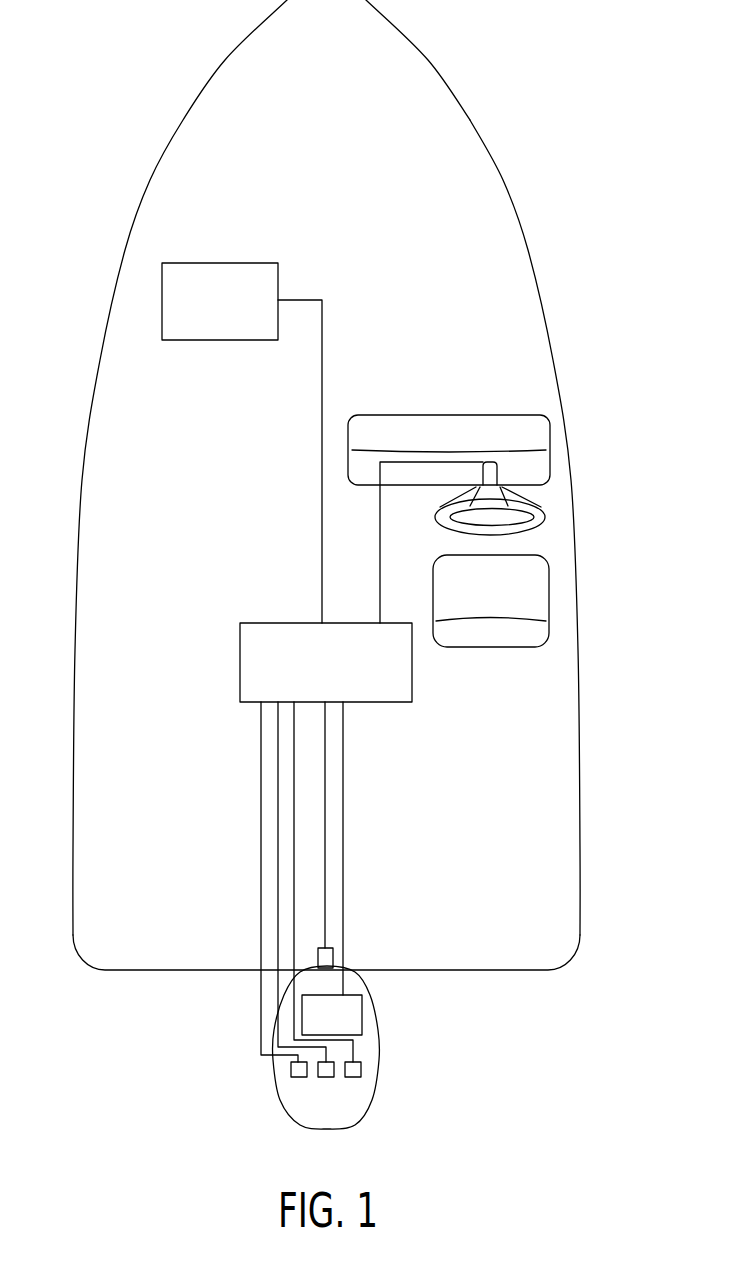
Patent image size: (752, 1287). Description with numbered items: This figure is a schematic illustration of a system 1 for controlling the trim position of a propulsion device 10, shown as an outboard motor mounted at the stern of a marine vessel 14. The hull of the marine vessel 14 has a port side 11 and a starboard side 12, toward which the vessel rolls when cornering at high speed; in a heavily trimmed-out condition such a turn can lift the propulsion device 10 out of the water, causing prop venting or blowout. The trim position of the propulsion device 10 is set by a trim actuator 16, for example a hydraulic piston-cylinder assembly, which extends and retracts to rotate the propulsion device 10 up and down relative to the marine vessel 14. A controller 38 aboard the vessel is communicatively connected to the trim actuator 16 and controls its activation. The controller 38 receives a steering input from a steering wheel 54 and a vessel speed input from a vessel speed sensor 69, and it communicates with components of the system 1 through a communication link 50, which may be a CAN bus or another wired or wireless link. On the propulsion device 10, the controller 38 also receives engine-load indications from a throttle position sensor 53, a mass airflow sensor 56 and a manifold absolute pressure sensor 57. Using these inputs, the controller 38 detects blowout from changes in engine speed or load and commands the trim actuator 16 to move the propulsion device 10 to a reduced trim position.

The system 1 is at (143, 101).
The propulsion device 10 is at (278, 1086).
The port side 11 is at (123, 257).
The starboard side 12 is at (534, 270).
The marine vessel 14 is at (482, 134).
The trim actuator 16 is at (317, 960).
The controller 38 is at (240, 664).
The communication link 50 is at (362, 1014).
The throttle position sensor 53 is at (353, 1080).
The steering wheel 54 is at (543, 528).
The mass airflow sensor 56 is at (297, 1080).
The manifold absolute pressure sensor 57 is at (326, 1080).
The vessel speed sensor 69 is at (222, 263).